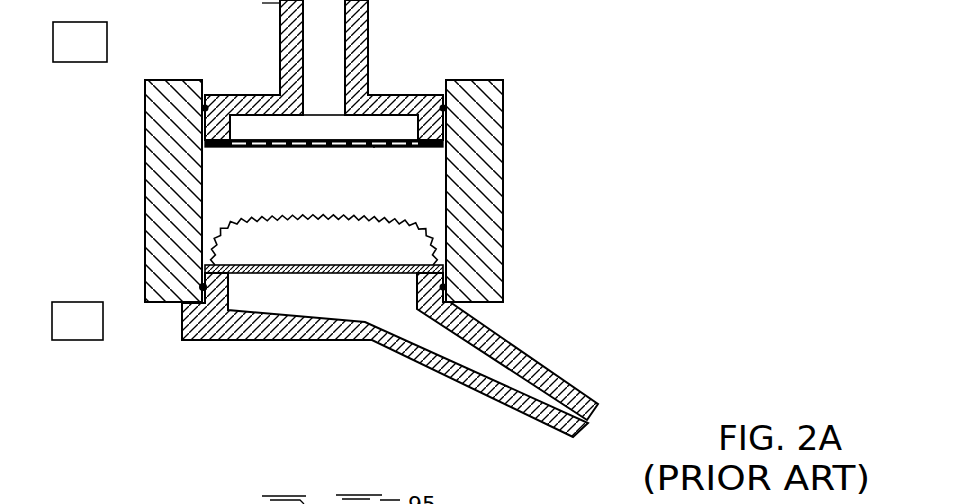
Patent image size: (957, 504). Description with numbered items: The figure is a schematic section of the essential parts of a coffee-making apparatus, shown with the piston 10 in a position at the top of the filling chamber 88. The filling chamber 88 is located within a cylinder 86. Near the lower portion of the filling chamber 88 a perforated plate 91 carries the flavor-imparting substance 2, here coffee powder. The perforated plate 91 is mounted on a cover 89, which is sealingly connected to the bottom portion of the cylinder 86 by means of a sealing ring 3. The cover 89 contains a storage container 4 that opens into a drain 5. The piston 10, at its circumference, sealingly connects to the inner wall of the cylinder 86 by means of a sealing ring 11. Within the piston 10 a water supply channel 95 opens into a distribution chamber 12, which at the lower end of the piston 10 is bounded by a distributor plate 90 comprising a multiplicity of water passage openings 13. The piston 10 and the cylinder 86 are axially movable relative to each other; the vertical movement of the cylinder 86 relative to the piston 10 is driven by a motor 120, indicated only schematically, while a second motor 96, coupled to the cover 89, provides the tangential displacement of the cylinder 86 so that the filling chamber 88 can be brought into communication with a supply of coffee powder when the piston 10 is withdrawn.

The flavor-imparting substance 2 is at (362, 245).
The sealing ring 3 is at (202, 286).
The storage container 4 is at (340, 295).
The drain 5 is at (592, 423).
The piston 10 is at (405, 94).
The sealing ring 11 is at (445, 108).
The distribution chamber 12 is at (278, 130).
The water passage openings 13 is at (373, 144).
The cylinder 86 is at (147, 178).
The filling chamber 88 is at (309, 192).
The cover 89 is at (308, 342).
The distributor plate 90 is at (257, 148).
The perforated plate 91 is at (248, 274).
The water supply channel 95 is at (322, 21).
The second motor 96 is at (182, 321).
The motor 120 is at (280, 42).